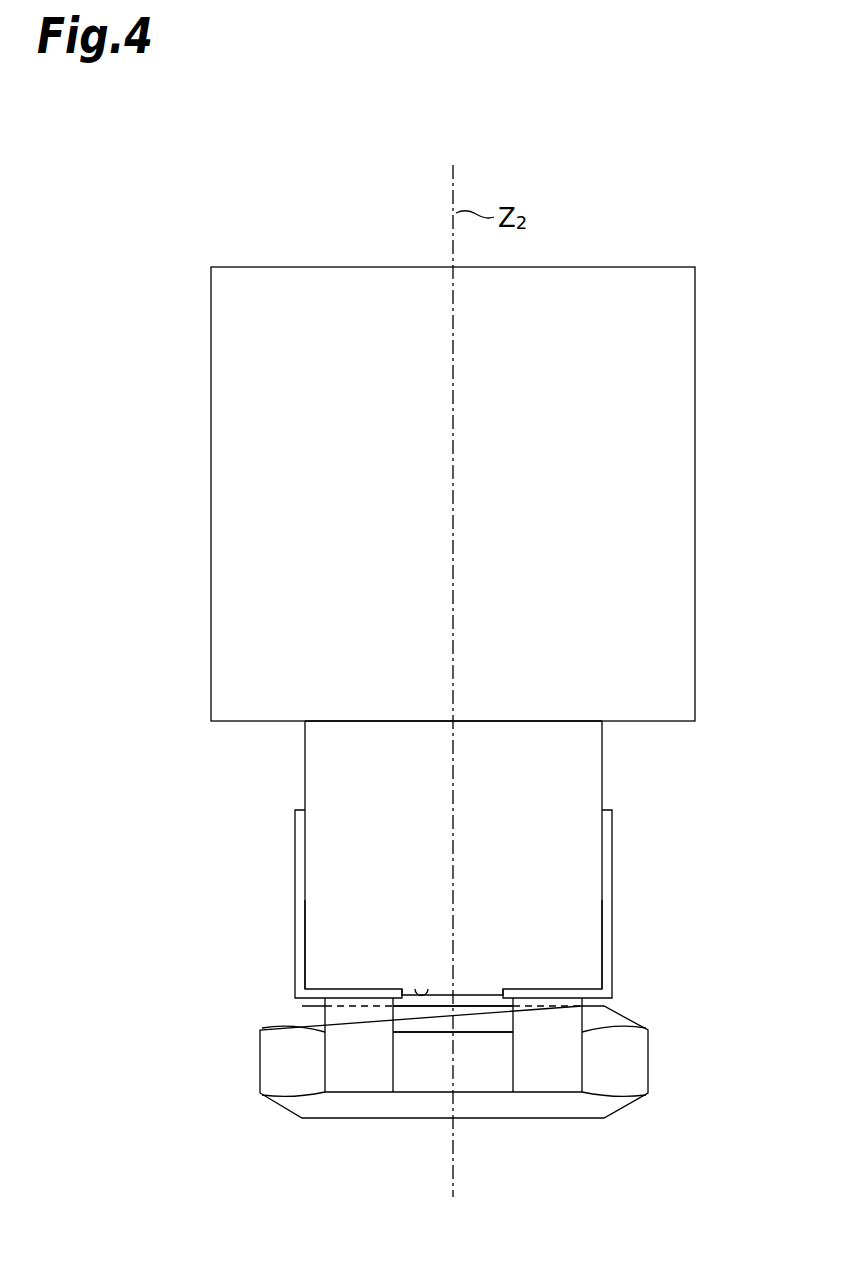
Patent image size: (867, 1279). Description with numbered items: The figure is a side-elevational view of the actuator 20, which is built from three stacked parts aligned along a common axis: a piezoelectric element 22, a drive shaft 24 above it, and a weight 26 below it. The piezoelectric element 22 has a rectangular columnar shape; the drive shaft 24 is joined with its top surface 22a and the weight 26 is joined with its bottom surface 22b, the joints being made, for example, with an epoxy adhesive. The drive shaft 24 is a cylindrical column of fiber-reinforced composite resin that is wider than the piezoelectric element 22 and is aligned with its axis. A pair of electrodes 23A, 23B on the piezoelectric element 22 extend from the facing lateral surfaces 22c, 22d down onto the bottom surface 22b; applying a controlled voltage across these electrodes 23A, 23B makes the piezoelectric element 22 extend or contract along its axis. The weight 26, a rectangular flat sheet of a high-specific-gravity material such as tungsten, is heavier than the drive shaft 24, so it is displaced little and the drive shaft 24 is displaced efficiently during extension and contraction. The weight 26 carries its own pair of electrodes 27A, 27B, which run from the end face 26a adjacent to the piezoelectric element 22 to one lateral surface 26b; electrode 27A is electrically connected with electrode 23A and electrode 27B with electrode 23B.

The actuator 20 is at (209, 170).
The piezoelectric element 22 is at (583, 765).
The top surface 22a is at (365, 720).
The bottom surface 22b is at (421, 988).
The lateral surface 22c is at (297, 927).
The lateral surface 22d is at (602, 921).
The electrode 23A is at (295, 857).
The electrode 23B is at (612, 850).
The drive shaft 24 is at (683, 365).
The weight 26 is at (637, 1062).
The end face 26a is at (487, 1004).
The lateral surface 26b is at (510, 1075).
The electrode 27A is at (362, 1075).
The electrode 27B is at (548, 1075).